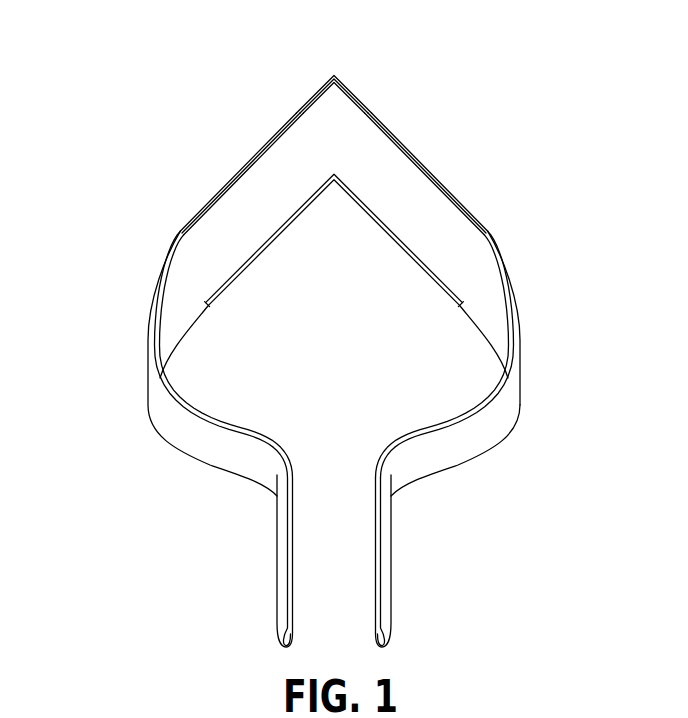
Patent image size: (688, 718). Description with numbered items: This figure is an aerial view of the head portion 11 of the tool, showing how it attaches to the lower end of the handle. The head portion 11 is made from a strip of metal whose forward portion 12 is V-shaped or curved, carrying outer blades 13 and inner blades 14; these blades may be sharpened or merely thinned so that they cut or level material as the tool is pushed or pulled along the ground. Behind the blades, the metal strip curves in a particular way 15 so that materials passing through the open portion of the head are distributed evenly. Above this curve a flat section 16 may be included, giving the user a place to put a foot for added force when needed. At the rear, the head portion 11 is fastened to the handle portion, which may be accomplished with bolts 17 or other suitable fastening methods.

The head portion 11 is at (142, 394).
The forward portion 12 is at (333, 79).
The outer blades 13 is at (418, 158).
The inner blades 14 is at (285, 243).
The curve 15 is at (523, 323).
The flat section 16 is at (470, 470).
The bolts 17 is at (400, 603).